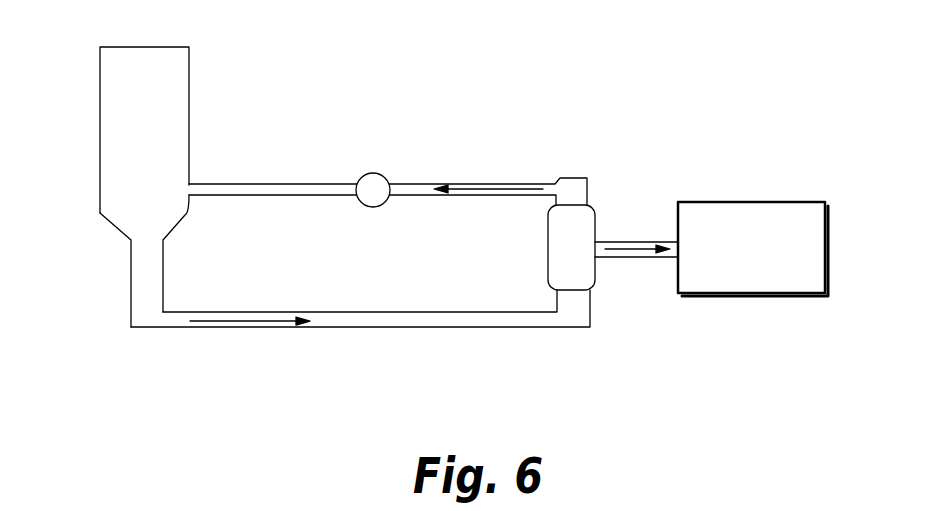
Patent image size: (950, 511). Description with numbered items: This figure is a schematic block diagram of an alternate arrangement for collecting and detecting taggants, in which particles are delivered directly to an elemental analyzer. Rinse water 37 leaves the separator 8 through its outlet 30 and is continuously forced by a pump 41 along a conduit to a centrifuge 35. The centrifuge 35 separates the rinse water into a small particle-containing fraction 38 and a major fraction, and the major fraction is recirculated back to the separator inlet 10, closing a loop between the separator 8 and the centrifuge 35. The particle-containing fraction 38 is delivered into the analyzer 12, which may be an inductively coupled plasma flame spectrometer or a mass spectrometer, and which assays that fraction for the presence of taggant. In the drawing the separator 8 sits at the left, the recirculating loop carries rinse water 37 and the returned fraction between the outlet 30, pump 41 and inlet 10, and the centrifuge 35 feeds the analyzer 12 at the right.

The separator 8 is at (100, 115).
The separator inlet 10 is at (189, 184).
The analyzer 12 is at (826, 238).
The outlet 30 is at (130, 263).
The centrifuge 35 is at (593, 205).
The rinse water 37 is at (250, 320).
The particle-containing fraction 38 is at (645, 248).
The pump 41 is at (376, 174).